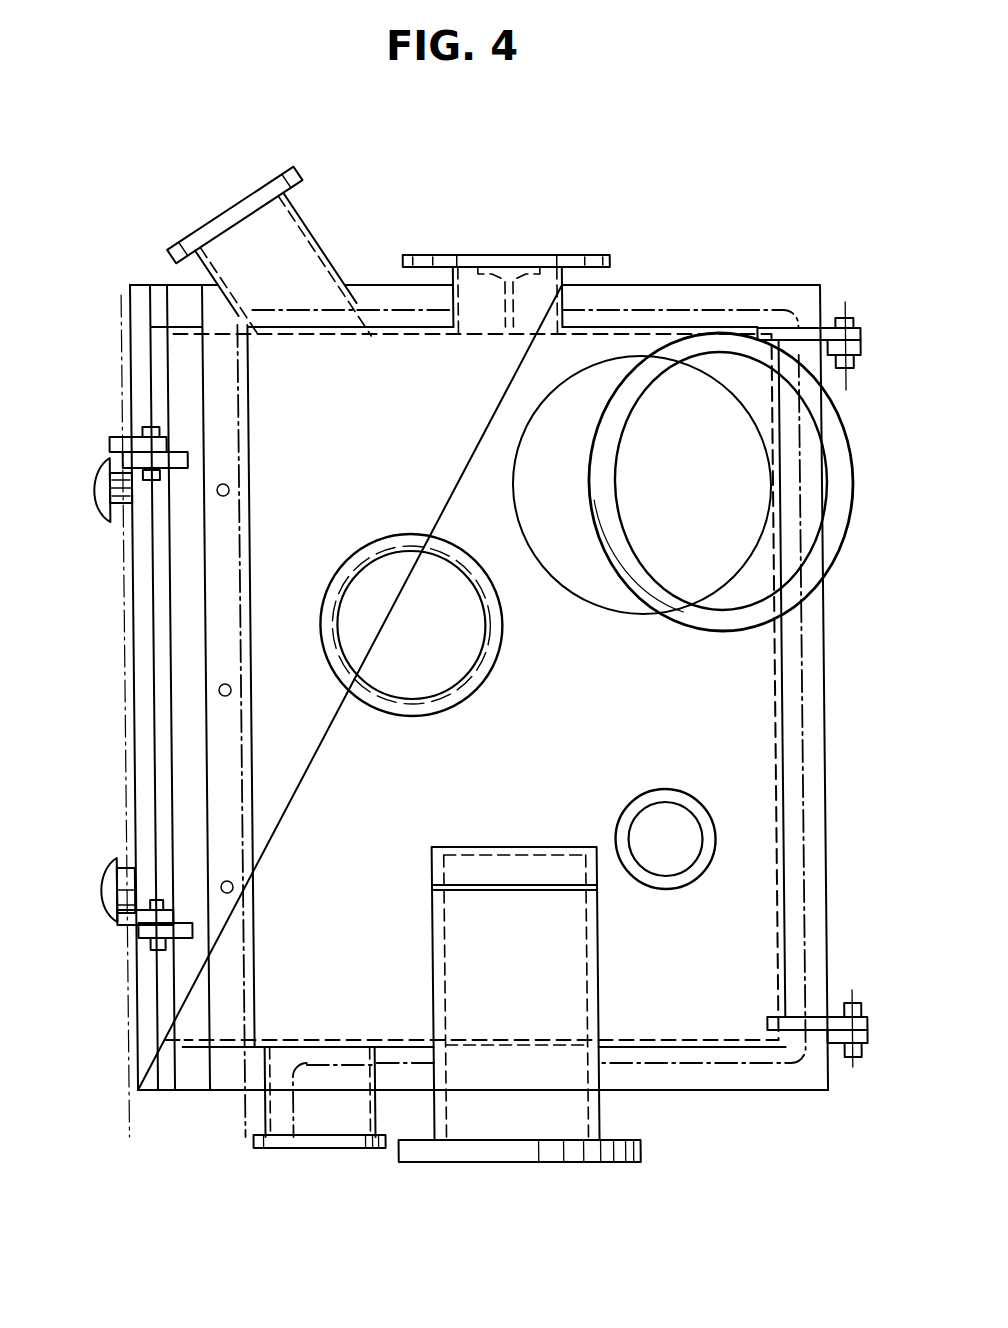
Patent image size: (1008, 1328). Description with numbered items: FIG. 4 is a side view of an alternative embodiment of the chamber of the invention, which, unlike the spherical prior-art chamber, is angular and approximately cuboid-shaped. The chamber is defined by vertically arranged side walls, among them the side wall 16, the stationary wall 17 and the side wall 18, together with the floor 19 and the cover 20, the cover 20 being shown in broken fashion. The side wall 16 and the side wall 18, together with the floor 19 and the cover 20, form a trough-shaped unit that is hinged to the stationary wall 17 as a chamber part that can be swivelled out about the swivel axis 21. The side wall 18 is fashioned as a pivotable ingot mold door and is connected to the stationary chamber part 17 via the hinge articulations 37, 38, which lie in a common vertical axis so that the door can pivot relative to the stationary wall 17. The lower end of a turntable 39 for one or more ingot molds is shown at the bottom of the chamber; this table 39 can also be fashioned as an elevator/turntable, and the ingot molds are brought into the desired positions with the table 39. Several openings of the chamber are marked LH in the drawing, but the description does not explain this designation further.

The side wall 16 is at (819, 675).
The stationary wall 17 is at (363, 439).
The side wall fashioned as a pivotable ingot mold door 18 is at (122, 628).
The floor 19 is at (214, 1090).
The cover 20 is at (363, 283).
The swivel axis 21 is at (845, 312).
The hinge articulation 37 is at (143, 433).
The hinge articulation 38 is at (144, 948).
The lower end of turntable 39 is at (592, 1113).
The liner port LH is at (633, 803).